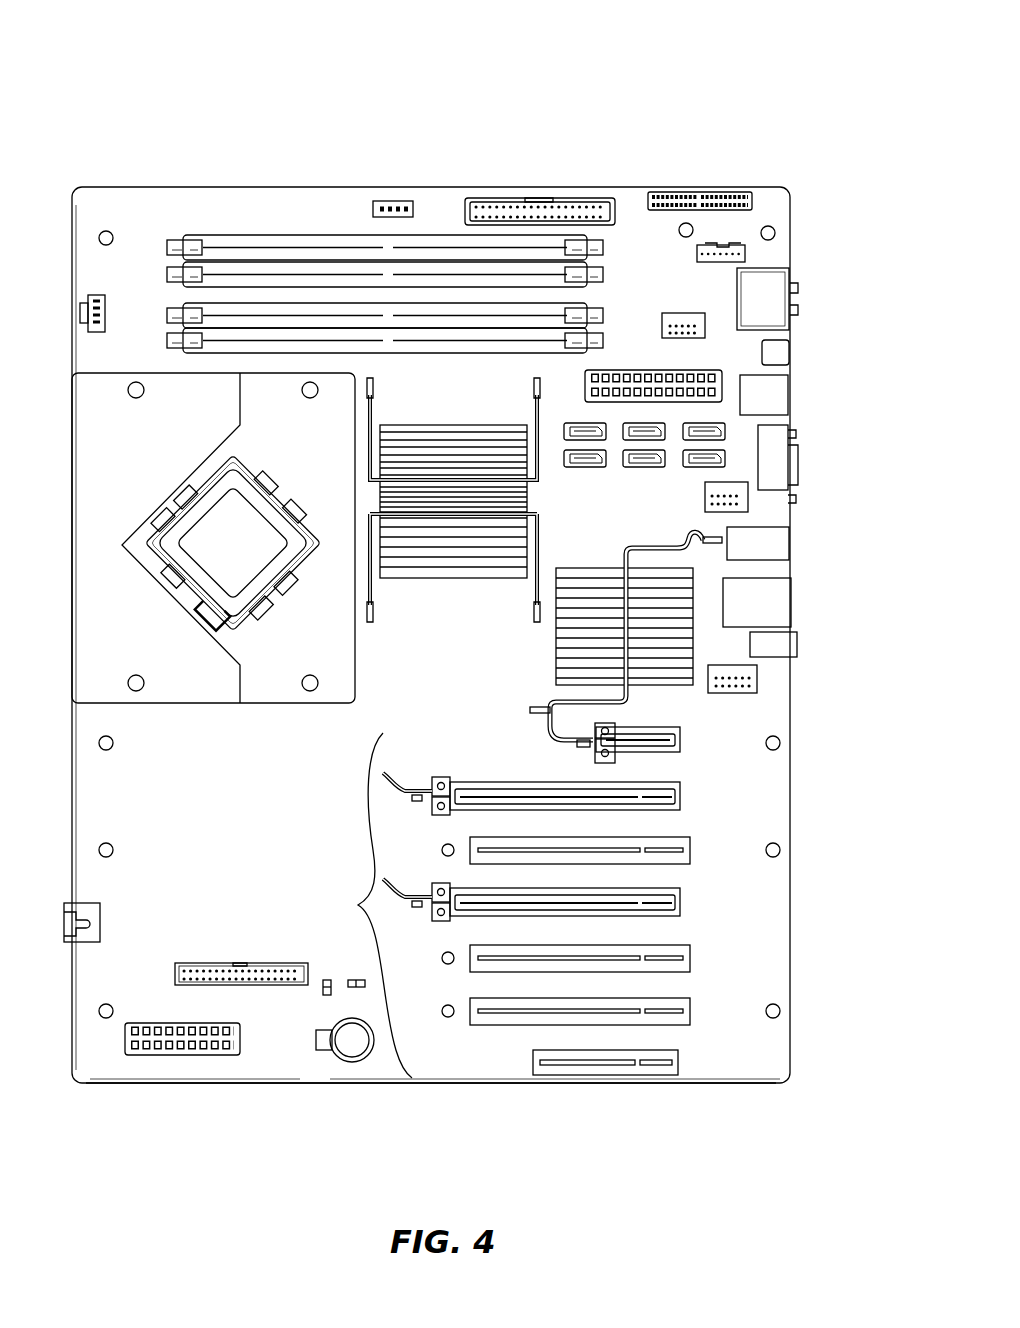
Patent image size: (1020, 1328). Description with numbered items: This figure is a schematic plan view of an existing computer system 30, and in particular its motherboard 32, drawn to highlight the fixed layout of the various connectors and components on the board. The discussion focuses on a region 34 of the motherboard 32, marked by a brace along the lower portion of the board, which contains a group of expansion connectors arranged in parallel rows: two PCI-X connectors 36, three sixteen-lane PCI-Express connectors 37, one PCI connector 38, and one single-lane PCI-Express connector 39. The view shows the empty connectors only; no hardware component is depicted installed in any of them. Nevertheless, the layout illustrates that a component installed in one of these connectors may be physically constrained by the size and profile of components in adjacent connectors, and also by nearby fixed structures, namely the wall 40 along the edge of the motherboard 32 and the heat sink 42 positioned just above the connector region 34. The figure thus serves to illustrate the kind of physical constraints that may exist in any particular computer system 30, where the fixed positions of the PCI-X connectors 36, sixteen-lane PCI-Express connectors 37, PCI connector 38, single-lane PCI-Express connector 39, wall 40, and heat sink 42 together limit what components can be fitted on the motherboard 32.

The computer system 30 is at (740, 66).
The motherboard 32 is at (627, 193).
The region 34 is at (358, 905).
The PCI-X connector 36 is at (680, 797).
The PCI-Express 16X connector 37 is at (690, 850).
The PCI connector 38 is at (588, 1064).
The PCI-Express 1X connector 39 is at (680, 740).
The wall 40 is at (490, 1084).
The heat sink 42 is at (556, 654).